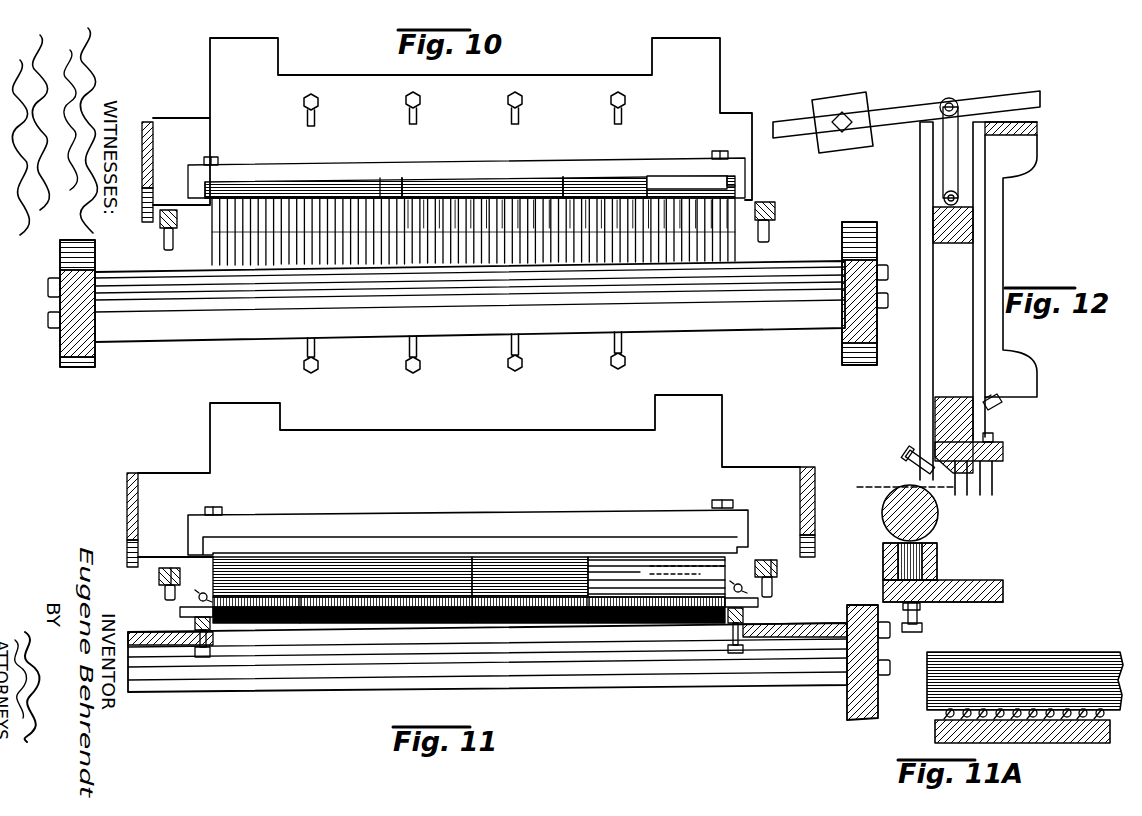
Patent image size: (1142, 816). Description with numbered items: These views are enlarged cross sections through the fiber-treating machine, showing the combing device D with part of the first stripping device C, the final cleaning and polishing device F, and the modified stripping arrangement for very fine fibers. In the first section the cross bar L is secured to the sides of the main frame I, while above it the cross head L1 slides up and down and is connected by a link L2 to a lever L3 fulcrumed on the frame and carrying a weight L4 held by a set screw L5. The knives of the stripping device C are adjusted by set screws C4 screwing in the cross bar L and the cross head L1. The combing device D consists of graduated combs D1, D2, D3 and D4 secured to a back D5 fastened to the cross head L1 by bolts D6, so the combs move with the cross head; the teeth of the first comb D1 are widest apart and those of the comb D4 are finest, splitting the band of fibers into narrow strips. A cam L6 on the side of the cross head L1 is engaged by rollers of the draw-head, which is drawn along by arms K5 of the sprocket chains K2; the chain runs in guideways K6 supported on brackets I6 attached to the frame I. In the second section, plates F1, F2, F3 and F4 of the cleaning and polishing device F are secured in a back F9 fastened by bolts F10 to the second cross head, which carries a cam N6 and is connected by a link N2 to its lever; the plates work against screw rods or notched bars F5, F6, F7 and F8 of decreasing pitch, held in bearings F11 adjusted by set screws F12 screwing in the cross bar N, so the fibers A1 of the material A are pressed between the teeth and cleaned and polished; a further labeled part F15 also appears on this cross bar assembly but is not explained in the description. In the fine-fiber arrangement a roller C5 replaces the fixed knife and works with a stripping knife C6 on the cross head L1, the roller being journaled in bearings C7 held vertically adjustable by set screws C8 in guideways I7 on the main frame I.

In FIG. 10, the cross head L1 is at (342, 82).
In FIG. 12, the cross head L1 is at (935, 420).
In FIG. 10, the cam L6 is at (148, 121).
In FIG. 10, the combing device D is at (466, 174).
In FIG. 12, the combing device D is at (976, 468).
In FIG. 10, the comb D1 is at (280, 222).
In FIG. 10, the comb D2 is at (495, 200).
In FIG. 10, the comb D3 is at (597, 207).
In FIG. 10, the comb D4 is at (673, 207).
In FIG. 10, the back D5 is at (388, 168).
In FIG. 10, the bolts D6 is at (217, 157).
In FIG. 10, the first stripping device C is at (434, 234).
In FIG. 10, the set screws C4 is at (303, 103).
In FIG. 12, the roller C5 is at (938, 515).
In FIG. 12, the stripping knife C6 is at (916, 456).
In FIG. 12, the bearings C7 is at (938, 549).
In FIG. 12, the set screws C8 is at (922, 628).
In FIG. 10, the cross bar L is at (270, 333).
In FIG. 10, the main frame I is at (60, 352).
In FIG. 12, the main frame I is at (997, 603).
In FIG. 11, the main frame I is at (878, 695).
In FIG. 10, the brackets I6 is at (176, 247).
In FIG. 11, the brackets I6 is at (165, 594).
In FIG. 12, the guideways I7 is at (938, 574).
In FIG. 10, the sprocket chains K2 is at (178, 216).
In FIG. 11, the arms K5 is at (171, 568).
In FIG. 10, the guideways K6 is at (160, 226).
In FIG. 11, the guideways K6 is at (159, 578).
In FIG. 12, the link L2 is at (943, 155).
In FIG. 12, the lever L3 is at (927, 110).
In FIG. 12, the weight L4 is at (840, 103).
In FIG. 12, the set screw L5 is at (847, 135).
In FIG. 12, the material A is at (878, 487).
In FIG. 11A, the fibers A1 is at (945, 713).
In FIG. 11, the cross bar N is at (333, 690).
In FIG. 11, the link N2 is at (384, 430).
In FIG. 11, the cam N6 is at (132, 473).
In FIG. 11, the cleaning and polishing device F is at (468, 589).
In FIG. 11, the plate F1 is at (293, 568).
In FIG. 11A, the plate F1 is at (1060, 665).
In FIG. 11, the plate F2 is at (428, 568).
In FIG. 11, the plate F3 is at (540, 568).
In FIG. 11, the plate F4 is at (645, 566).
In FIG. 11A, the screw rod F5 is at (935, 738).
In FIG. 11, the screw rod F6 is at (410, 623).
In FIG. 11, the screw rod F7 is at (540, 623).
In FIG. 11, the screw rod F8 is at (645, 623).
In FIG. 11, the back F9 is at (400, 517).
In FIG. 11, the bolts F10 is at (215, 507).
In FIG. 11, the bearings F11 is at (180, 612).
In FIG. 11, the set screws F12 is at (197, 660).
In FIG. 11, the band section F15 is at (267, 625).